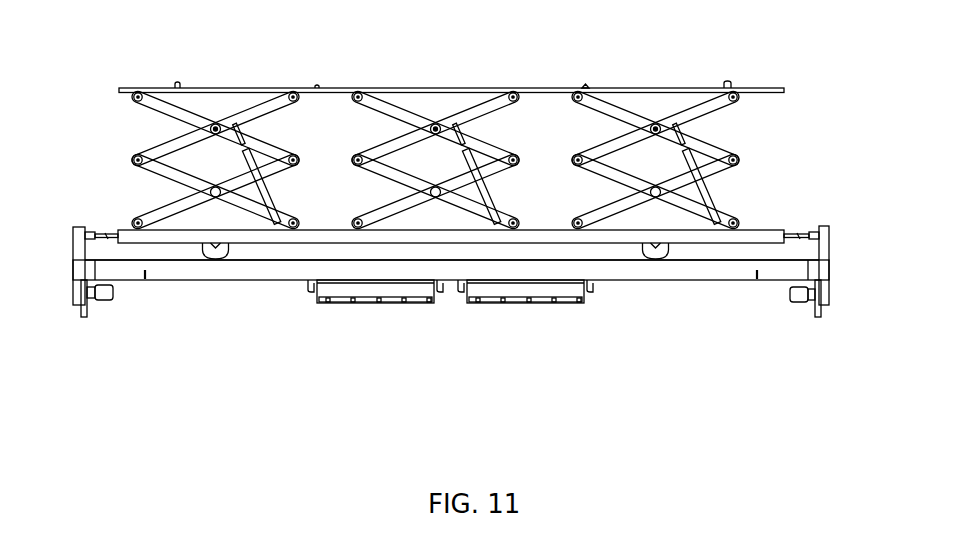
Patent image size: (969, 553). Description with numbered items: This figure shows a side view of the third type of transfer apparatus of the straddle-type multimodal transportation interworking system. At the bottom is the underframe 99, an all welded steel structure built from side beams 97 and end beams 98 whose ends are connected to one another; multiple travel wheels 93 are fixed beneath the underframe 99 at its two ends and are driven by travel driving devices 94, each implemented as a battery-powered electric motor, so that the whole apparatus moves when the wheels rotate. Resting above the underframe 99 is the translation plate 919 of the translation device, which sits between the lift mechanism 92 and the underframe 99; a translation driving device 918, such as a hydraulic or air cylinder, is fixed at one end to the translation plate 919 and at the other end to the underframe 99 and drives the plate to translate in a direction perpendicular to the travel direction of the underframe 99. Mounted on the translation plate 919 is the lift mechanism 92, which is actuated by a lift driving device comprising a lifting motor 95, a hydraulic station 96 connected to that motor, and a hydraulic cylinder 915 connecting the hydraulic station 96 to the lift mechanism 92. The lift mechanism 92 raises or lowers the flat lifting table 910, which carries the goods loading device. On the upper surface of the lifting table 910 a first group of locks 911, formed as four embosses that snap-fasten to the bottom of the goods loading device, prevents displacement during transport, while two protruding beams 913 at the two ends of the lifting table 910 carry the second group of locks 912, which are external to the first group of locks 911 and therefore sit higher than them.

The lift mechanism 92 is at (422, 125).
The travel wheels 93 is at (85, 310).
The travel driving device 94 is at (105, 295).
The lifting motor 95 is at (365, 296).
The hydraulic station 96 is at (575, 297).
The side beams 97 is at (685, 272).
The end beams 98 is at (826, 272).
The underframe 99 is at (239, 272).
The lifting table 910 is at (485, 88).
The first group of locks 911 is at (585, 86).
The second group of locks 912 is at (727, 82).
The protruding beams 913 is at (177, 83).
The hydraulic cylinder 915 is at (715, 190).
The translation driving device 918 is at (93, 235).
The translation plate 919 is at (158, 238).